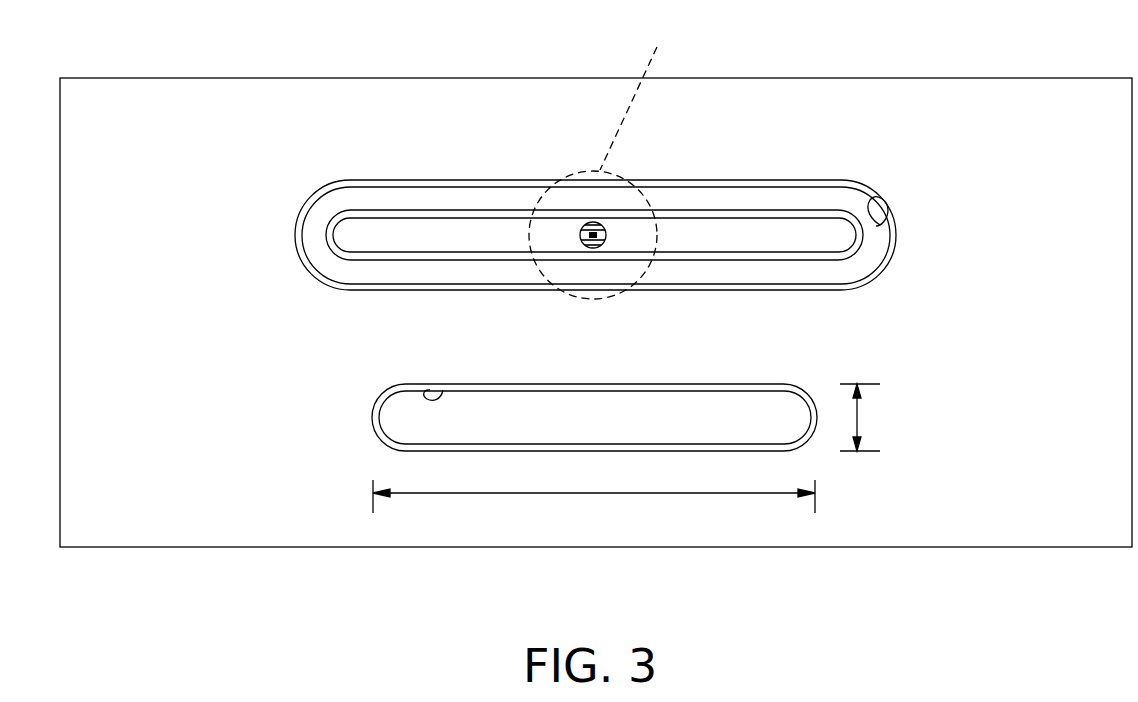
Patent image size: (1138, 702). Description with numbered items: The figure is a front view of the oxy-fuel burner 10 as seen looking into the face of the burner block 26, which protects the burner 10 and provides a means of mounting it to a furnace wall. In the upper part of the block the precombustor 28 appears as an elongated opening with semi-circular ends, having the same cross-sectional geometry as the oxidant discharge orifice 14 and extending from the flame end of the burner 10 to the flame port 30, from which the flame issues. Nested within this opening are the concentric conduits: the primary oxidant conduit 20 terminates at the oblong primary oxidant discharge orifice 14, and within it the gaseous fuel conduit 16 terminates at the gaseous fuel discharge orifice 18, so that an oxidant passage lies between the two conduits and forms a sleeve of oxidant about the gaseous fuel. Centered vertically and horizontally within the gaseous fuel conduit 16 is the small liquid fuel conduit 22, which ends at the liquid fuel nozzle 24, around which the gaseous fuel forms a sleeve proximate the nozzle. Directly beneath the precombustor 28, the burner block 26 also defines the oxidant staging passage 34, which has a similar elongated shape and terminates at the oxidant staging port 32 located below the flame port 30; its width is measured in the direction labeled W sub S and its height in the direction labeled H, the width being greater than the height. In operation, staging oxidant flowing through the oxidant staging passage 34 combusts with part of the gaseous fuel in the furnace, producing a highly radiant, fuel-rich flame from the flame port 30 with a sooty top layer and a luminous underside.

The burner 10 is at (596, 330).
The primary oxidant discharge orifice 14 is at (326, 203).
The gaseous fuel conduit 16 is at (433, 261).
The gaseous fuel discharge orifice 18 is at (349, 234).
The primary oxidant conduit 20 is at (377, 181).
The liquid fuel conduit 22 is at (581, 234).
The liquid fuel nozzle 24 is at (598, 228).
The burner block 26 is at (237, 547).
The precombustor 28 is at (880, 225).
The flame port 30 is at (780, 180).
The oxidant staging port 32 is at (605, 384).
The oxidant staging passage 34 is at (443, 390).